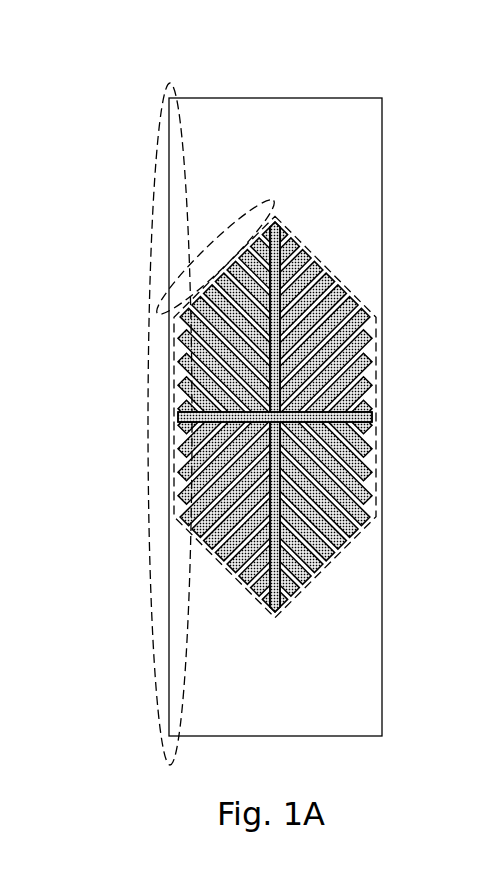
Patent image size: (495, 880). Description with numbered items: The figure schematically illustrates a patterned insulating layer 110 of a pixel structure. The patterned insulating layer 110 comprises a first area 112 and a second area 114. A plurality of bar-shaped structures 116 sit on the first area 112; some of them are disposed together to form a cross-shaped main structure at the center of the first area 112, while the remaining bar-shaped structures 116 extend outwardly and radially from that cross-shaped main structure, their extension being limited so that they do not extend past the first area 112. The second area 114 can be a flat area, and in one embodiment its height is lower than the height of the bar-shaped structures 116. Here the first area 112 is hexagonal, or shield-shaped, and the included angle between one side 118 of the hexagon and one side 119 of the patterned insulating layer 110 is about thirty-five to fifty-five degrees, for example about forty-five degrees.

The patterned insulating layer 110 is at (452, 777).
The first area 112 is at (320, 416).
The second area 114 is at (362, 157).
The bar-shaped structures 116 is at (368, 437).
The side of the hexagon 118 is at (252, 218).
The side of the patterned insulating layer 119 is at (150, 242).